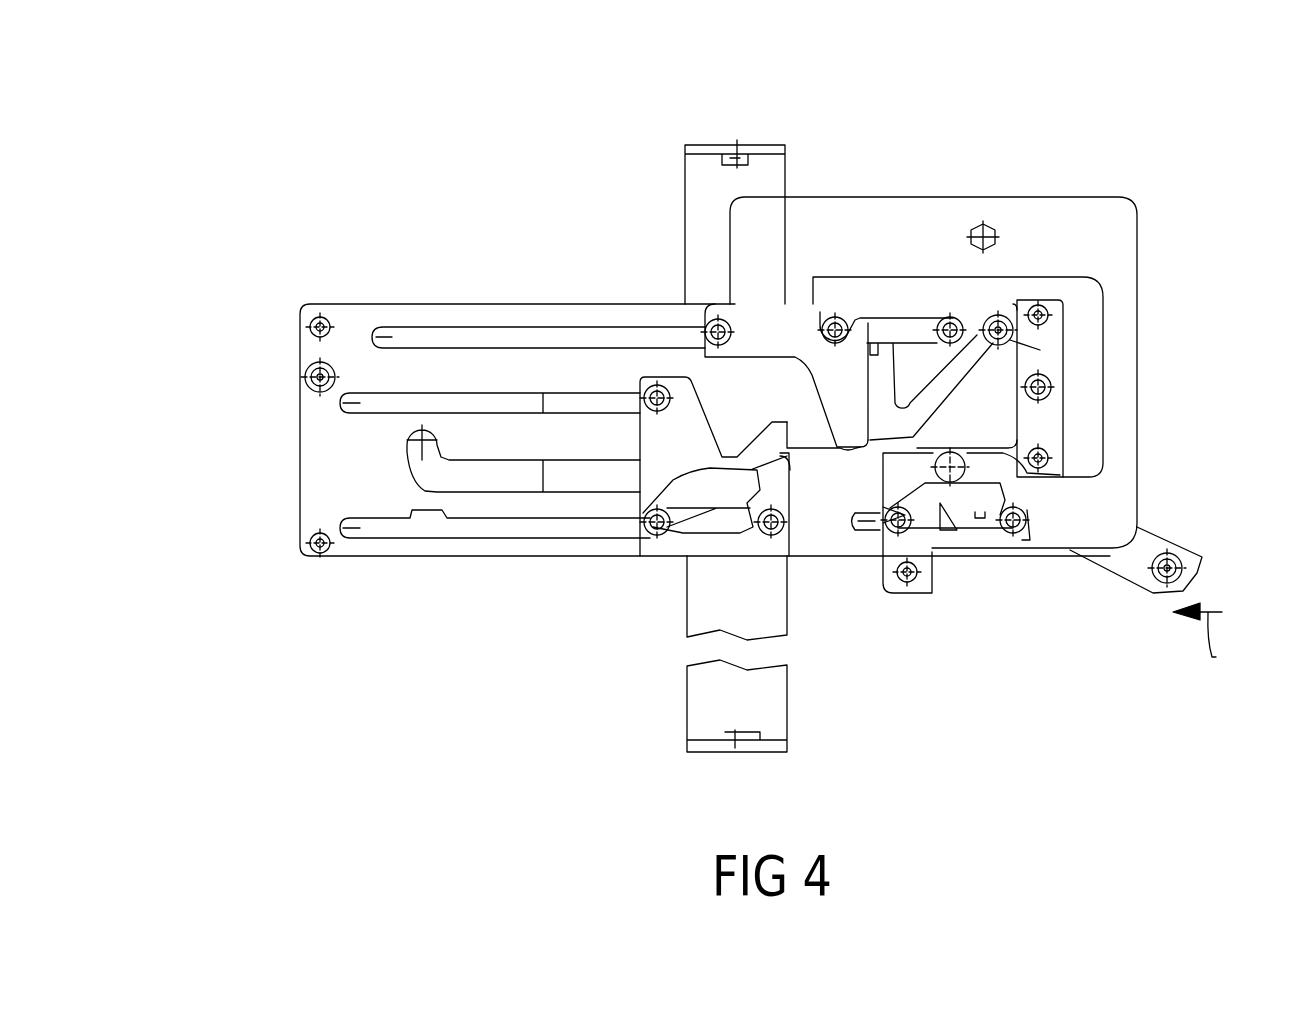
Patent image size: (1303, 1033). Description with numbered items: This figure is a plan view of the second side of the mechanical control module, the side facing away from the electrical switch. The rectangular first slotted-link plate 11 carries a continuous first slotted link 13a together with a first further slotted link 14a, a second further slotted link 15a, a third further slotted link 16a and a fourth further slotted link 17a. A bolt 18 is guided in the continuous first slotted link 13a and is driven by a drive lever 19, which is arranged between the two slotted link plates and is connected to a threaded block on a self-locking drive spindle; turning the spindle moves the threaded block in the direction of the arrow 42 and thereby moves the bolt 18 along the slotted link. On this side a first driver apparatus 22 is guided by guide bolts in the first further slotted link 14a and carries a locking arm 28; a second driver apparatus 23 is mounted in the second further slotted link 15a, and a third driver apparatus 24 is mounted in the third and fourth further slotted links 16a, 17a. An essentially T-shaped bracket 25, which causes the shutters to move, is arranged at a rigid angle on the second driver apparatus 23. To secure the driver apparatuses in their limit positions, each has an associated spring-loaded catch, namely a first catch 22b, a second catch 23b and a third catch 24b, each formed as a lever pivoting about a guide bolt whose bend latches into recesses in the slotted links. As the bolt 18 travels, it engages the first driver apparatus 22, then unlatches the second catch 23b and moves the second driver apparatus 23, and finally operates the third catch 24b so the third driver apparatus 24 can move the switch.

The first slotted-link plate 11 is at (372, 304).
The continuous first slotted link 13a is at (403, 456).
The first further slotted link 14a is at (857, 556).
The second further slotted link 15a is at (560, 327).
The third further slotted link 16a is at (353, 414).
The fourth further slotted link 17a is at (445, 539).
The bolt 18 is at (960, 430).
The drive lever 19 is at (1170, 528).
The first driver apparatus 22 is at (890, 470).
The first catch 22b is at (1020, 487).
The second driver apparatus 23 is at (868, 298).
The second catch 23b is at (1040, 350).
The third driver apparatus 24 is at (633, 425).
The third catch 24b is at (808, 483).
The T-shaped bracket 25 is at (685, 152).
The locking arm 28 is at (948, 196).
The arrow 42 is at (1204, 653).